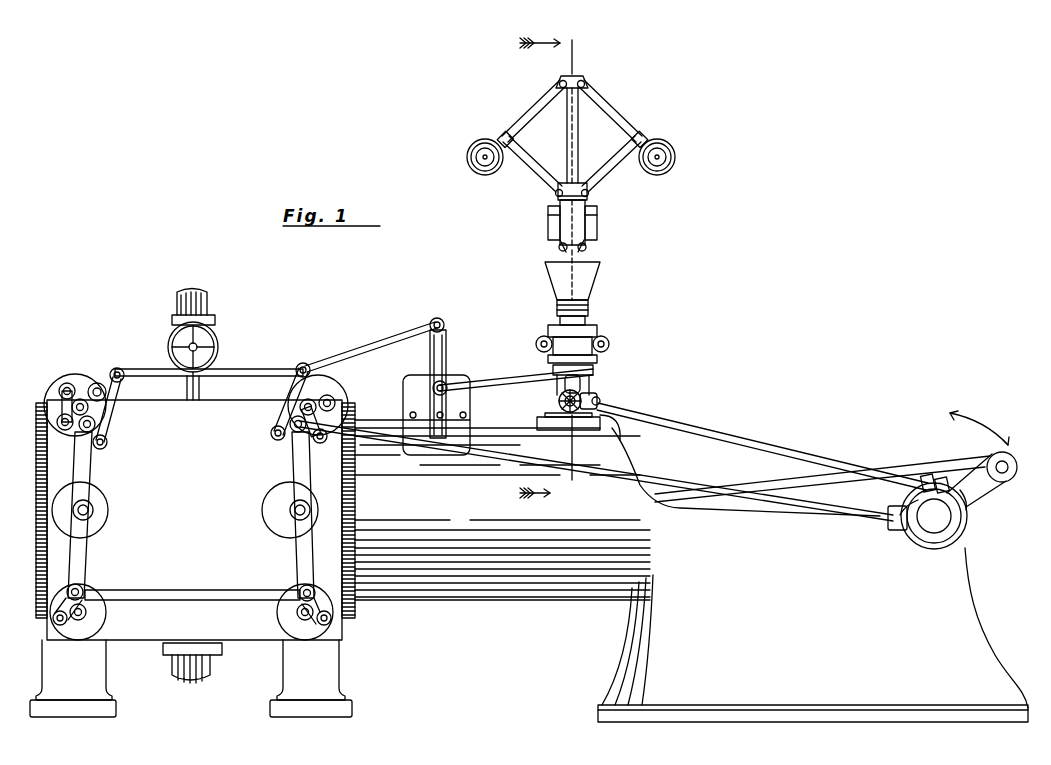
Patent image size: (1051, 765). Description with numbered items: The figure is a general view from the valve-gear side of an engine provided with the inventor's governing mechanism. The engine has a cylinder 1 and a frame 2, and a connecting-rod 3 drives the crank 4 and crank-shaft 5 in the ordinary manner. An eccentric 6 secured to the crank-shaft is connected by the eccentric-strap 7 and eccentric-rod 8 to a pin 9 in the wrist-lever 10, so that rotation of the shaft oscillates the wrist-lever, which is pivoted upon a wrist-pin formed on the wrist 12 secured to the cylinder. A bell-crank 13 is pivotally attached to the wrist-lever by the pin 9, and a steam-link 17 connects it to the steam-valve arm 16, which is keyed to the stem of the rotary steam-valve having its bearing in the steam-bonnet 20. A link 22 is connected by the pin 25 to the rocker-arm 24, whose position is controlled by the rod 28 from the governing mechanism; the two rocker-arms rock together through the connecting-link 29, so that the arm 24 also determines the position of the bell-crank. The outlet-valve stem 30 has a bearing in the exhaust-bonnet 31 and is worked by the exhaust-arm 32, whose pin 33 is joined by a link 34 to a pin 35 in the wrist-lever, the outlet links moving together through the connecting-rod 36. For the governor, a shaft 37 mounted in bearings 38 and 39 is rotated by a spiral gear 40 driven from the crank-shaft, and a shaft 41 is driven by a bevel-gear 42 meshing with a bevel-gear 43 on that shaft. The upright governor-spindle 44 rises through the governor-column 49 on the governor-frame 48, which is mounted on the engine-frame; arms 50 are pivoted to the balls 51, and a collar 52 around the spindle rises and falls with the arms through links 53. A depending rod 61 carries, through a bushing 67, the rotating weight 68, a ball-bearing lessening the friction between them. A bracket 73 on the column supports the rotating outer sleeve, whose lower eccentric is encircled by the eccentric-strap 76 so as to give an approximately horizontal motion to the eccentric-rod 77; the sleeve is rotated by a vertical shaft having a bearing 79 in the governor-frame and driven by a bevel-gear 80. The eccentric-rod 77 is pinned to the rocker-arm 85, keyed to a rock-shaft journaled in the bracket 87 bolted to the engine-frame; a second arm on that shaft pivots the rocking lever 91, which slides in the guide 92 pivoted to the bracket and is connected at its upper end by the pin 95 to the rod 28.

The cylinder 1 is at (190, 518).
The frame 2 is at (691, 571).
The connecting-rod 3 is at (785, 478).
The crank 4 is at (985, 500).
The crank-shaft 5 is at (934, 516).
The eccentric 6 is at (940, 542).
The eccentric-strap 7 is at (913, 545).
The eccentric-rod 8 is at (617, 475).
The pin 9 is at (548, 262).
The wrist-lever 10 is at (84, 548).
The wrist 12 is at (103, 495).
The bell-crank 13 is at (108, 430).
The steam-valve arm 16 is at (97, 383).
The steam-link 17 is at (58, 395).
The steam-bonnet 20 is at (76, 392).
The link 22 is at (90, 407).
The rocker-arm 24 is at (120, 367).
The pin 25 is at (305, 362).
The rod 28 is at (368, 344).
The connecting-link 29 is at (258, 357).
The valve-stem 30 is at (88, 612).
The exhaust-bonnet 31 is at (92, 628).
The exhaust-arm 32 is at (72, 622).
The pin 33 is at (58, 625).
The link 34 is at (50, 598).
The pin 35 is at (84, 592).
The connecting-rod 36 is at (190, 594).
The shaft 37 is at (778, 450).
The bearing 38 is at (612, 401).
The bearing 39 is at (925, 475).
The spiral gear 40 is at (944, 478).
The shaft 41 is at (560, 398).
The bevel-gear 42 is at (560, 403).
The bevel-gear 43 is at (592, 395).
The governor-spindle 44 is at (578, 140).
The governor-frame 48 is at (612, 438).
The governor-column 49 is at (570, 218).
The arms 50 is at (530, 115).
The balls 51 is at (468, 153).
The collar 52 is at (558, 183).
The links 53 is at (538, 172).
The depending rod 61 is at (586, 247).
The bushing 67 is at (557, 308).
The weight 68 is at (598, 282).
The bracket 73 is at (590, 340).
The eccentric-strap 76 is at (593, 370).
The eccentric-rod 77 is at (505, 383).
The bearing 79 is at (524, 394).
The bevel-gear 80 is at (585, 392).
The rocker-arm 85 is at (455, 405).
The bracket 87 is at (412, 380).
The rocking lever 91 is at (430, 345).
The guide 92 is at (447, 362).
The pin 95 is at (443, 320).